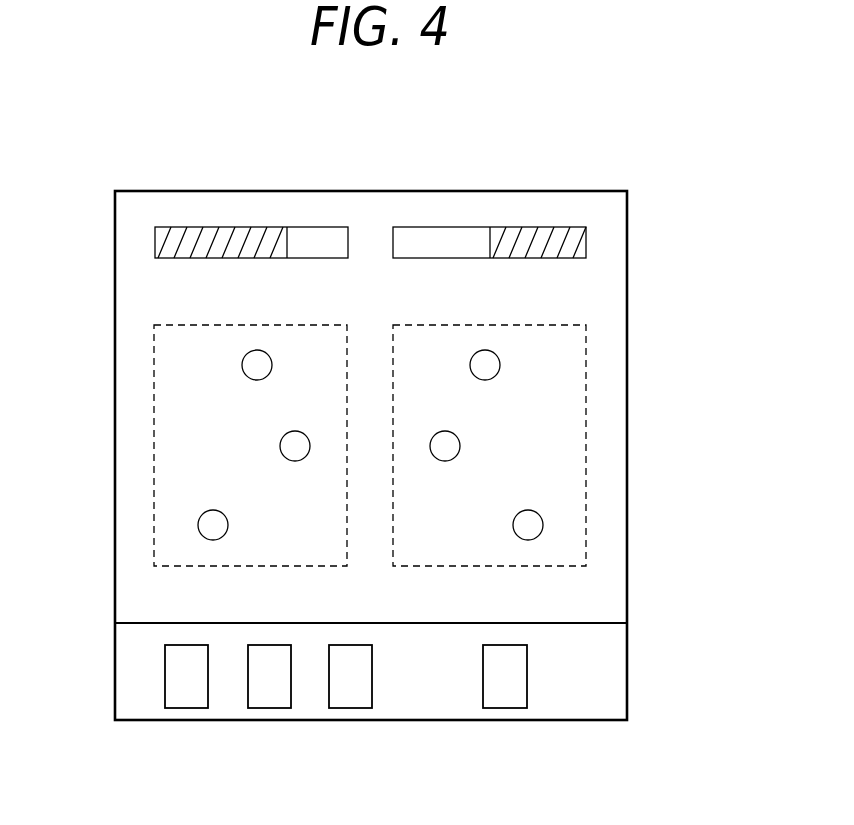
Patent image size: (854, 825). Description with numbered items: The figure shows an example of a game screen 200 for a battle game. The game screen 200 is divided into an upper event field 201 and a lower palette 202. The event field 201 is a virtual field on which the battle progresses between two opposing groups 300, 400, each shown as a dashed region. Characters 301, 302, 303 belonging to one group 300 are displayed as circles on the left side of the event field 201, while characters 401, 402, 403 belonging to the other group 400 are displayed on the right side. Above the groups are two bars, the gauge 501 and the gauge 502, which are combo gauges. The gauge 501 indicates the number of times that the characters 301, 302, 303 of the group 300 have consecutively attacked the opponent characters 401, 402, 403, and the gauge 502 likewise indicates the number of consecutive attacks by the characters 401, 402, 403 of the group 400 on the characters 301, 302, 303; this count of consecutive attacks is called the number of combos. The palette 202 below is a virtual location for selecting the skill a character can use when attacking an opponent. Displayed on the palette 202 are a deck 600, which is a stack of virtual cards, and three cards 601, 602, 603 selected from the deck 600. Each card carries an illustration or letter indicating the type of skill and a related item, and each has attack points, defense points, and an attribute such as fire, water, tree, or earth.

The game screen 200 is at (638, 158).
The event field 201 is at (593, 278).
The palette 202 is at (593, 660).
The group 300 is at (154, 352).
The character 301 is at (242, 367).
The character 302 is at (280, 447).
The character 303 is at (198, 527).
The group 400 is at (586, 335).
The character 401 is at (500, 364).
The character 402 is at (460, 446).
The character 403 is at (543, 525).
The gauge 501 is at (245, 227).
The gauge 502 is at (517, 227).
The deck 600 is at (506, 695).
The card 601 is at (187, 695).
The card 602 is at (269, 695).
The card 603 is at (352, 695).